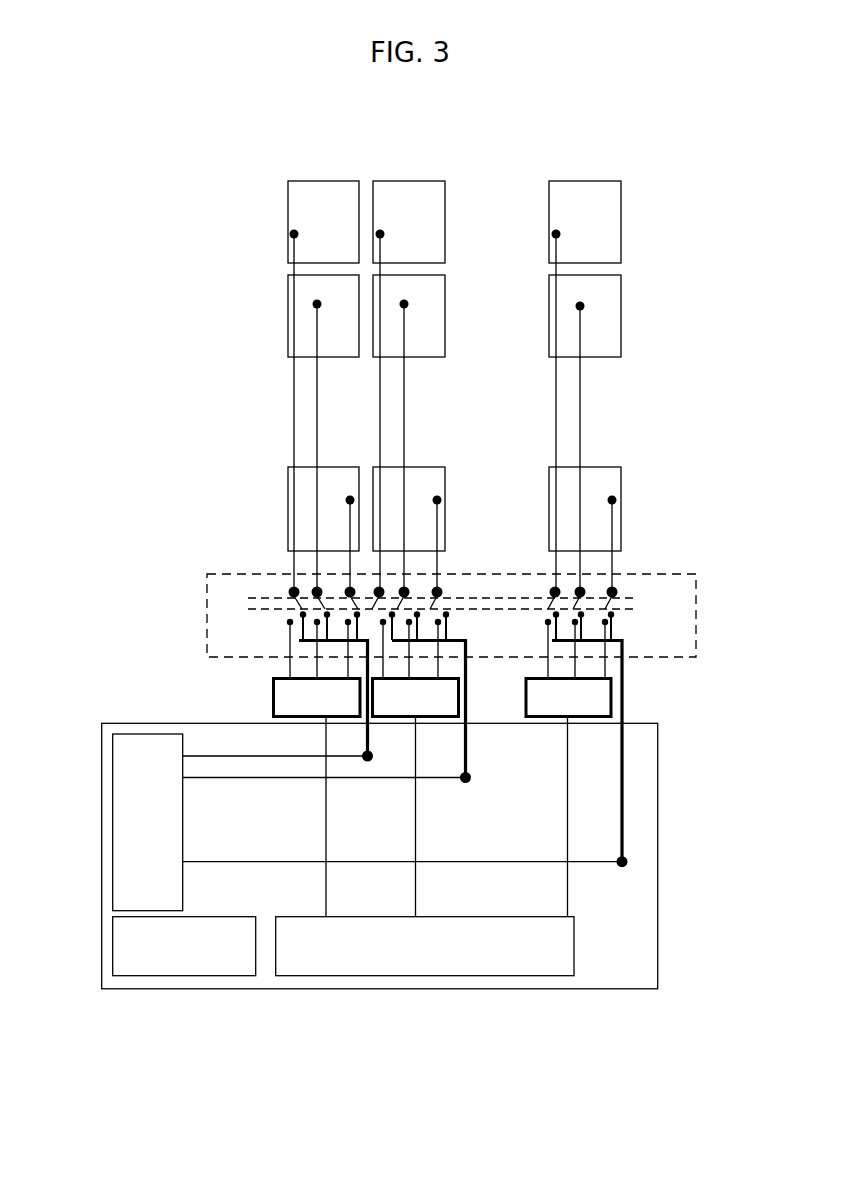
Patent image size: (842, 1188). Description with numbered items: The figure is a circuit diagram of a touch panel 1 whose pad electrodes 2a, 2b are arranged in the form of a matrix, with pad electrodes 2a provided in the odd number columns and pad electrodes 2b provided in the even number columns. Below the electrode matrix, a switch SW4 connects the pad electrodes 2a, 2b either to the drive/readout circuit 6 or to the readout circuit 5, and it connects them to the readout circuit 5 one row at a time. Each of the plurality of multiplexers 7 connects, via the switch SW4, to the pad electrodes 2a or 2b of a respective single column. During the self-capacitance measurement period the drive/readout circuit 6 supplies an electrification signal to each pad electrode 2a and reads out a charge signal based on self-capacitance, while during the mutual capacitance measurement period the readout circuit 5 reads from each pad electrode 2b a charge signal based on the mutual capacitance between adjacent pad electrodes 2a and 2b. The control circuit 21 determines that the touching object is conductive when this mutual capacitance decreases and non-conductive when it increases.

The touch panel 1 is at (626, 146).
The pad electrodes 2a is at (288, 214).
The pad electrodes 2b is at (445, 214).
The switch SW4 is at (696, 618).
The multiplexers 7 is at (273, 690).
The readout circuit 5 is at (112, 813).
The control circuit 21 is at (194, 976).
The drive/readout circuit 6 is at (426, 976).